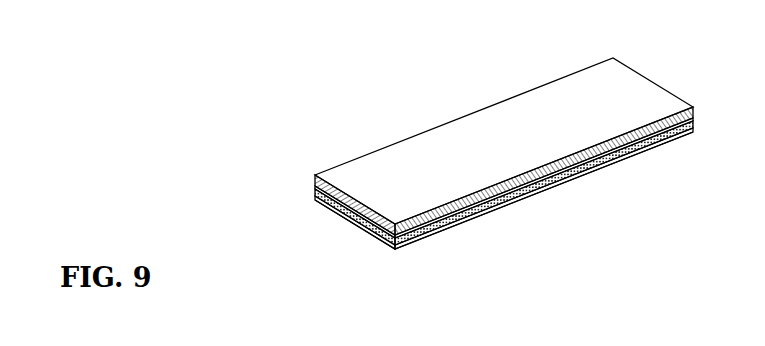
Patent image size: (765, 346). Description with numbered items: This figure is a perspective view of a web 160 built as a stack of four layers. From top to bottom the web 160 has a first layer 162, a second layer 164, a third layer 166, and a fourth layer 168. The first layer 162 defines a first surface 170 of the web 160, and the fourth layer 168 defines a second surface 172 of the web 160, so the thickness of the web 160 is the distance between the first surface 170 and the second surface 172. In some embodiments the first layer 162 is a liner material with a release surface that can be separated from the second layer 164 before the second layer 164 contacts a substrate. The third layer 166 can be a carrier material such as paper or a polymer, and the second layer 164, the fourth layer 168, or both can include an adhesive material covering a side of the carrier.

The web 160 is at (293, 114).
The first layer 162 is at (343, 171).
The second layer 164 is at (315, 185).
The third layer 166 is at (317, 191).
The fourth layer 168 is at (315, 200).
The first surface 170 is at (563, 94).
The second surface 172 is at (588, 181).